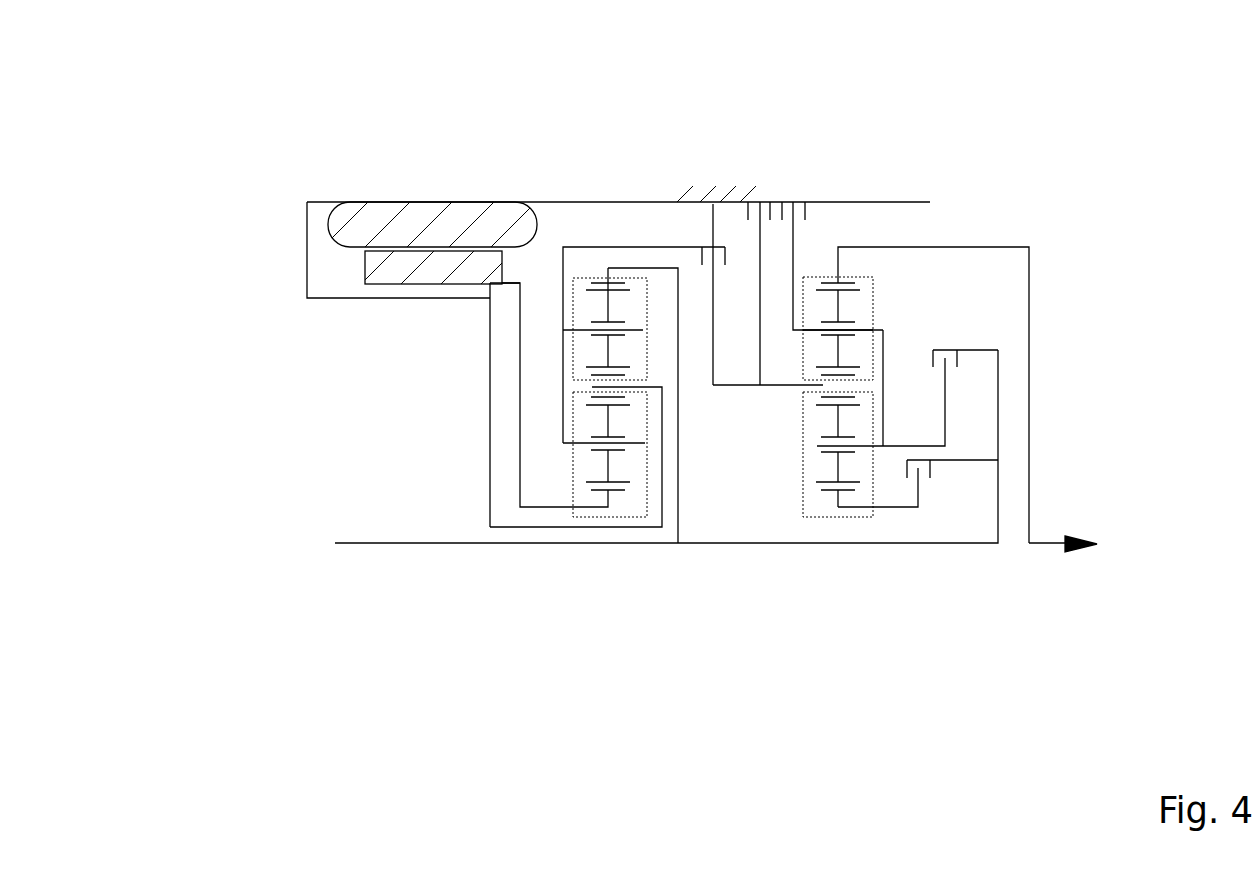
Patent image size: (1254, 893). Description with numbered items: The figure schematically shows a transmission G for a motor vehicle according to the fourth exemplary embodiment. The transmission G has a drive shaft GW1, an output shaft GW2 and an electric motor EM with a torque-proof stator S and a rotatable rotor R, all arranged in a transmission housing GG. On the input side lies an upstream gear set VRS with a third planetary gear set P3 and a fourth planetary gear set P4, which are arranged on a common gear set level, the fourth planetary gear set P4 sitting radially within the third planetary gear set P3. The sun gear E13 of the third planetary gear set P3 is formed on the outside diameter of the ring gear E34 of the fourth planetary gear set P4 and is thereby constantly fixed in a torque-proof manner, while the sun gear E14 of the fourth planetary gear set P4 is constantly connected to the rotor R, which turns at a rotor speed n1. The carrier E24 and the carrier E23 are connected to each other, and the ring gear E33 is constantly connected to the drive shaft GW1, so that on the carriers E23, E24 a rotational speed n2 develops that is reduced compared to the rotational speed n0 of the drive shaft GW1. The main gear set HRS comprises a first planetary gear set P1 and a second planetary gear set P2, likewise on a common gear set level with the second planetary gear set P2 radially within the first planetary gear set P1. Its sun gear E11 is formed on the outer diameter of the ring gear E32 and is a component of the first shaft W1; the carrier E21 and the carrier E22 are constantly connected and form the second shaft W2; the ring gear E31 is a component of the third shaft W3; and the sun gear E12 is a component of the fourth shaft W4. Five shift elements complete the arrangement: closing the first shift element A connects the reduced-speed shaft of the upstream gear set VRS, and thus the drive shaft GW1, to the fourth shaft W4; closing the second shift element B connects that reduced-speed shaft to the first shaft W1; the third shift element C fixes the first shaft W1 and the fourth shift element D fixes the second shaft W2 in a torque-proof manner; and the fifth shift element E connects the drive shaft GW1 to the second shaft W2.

The transmission G is at (296, 416).
The transmission housing GG is at (305, 245).
The electric motor EM is at (408, 65).
The rotor R is at (403, 270).
The stator S is at (433, 238).
The upstream gear set VRS is at (613, 573).
The main gear set HRS is at (842, 573).
The first planetary gear set P1 is at (891, 398).
The second planetary gear set P2 is at (1025, 484).
The third planetary gear set P3 is at (397, 398).
The fourth planetary gear set P4 is at (586, 398).
The sun gear of the first planetary gear set E11 is at (815, 388).
The carrier of the first planetary gear set E21 is at (812, 318).
The ring gear of the first planetary gear set E31 is at (849, 276).
The sun gear of the second planetary gear set E12 is at (849, 497).
The carrier of the second planetary gear set E22 is at (976, 545).
The ring gear of the second planetary gear set E32 is at (877, 358).
The sun gear of the third planetary gear set E13 is at (597, 380).
The carrier of the third planetary gear set E23 is at (585, 325).
The ring gear of the third planetary gear set E33 is at (600, 281).
The sun gear of the fourth planetary gear set E14 is at (598, 495).
The carrier of the fourth planetary gear set E24 is at (583, 455).
The ring gear of the fourth planetary gear set E34 is at (624, 388).
The first shift element A is at (944, 477).
The second shift element B is at (711, 228).
The third shift element C is at (757, 198).
The fourth shift element D is at (798, 198).
The fifth shift element E is at (964, 363).
The first shaft of the main gear set W1 is at (777, 388).
The second shaft of the main gear set W2 is at (886, 425).
The third shaft of the main gear set W3 is at (1010, 247).
The fourth shaft of the main gear set W4 is at (866, 450).
The drive shaft GW1 is at (605, 632).
The output shaft GW2 is at (1053, 547).
The rotational speed of the drive shaft n0 is at (450, 541).
The rotor speed n1 is at (516, 387).
The reduced rotational speed n2 is at (647, 252).